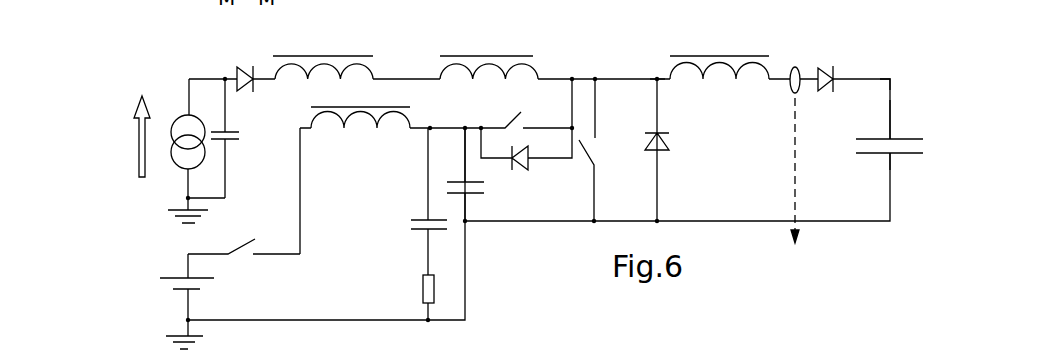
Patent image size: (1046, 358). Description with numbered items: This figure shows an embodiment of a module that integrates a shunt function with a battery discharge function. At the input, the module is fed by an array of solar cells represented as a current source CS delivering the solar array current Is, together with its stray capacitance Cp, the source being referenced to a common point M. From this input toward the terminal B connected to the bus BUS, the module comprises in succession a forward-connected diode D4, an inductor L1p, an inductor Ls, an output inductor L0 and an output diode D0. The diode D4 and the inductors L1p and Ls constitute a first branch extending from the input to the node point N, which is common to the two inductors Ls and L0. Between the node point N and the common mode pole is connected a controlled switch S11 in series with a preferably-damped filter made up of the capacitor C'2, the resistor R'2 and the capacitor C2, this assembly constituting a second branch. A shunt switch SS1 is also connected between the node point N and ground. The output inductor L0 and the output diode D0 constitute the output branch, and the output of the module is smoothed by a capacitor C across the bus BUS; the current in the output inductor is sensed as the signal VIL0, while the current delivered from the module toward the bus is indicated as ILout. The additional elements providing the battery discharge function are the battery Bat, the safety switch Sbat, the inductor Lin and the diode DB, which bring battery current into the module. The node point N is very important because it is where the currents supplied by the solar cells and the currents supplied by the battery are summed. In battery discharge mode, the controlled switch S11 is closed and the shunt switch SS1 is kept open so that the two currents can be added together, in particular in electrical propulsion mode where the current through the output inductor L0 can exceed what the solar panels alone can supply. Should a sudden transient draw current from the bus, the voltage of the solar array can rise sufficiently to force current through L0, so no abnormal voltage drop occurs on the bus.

The solar array current Is is at (129, 136).
The current source CS is at (187, 151).
The stray capacitance Cp is at (239, 138).
The forward-connected diode D4 is at (235, 61).
The inductor L1p is at (341, 48).
The inductor Ls is at (495, 48).
The inductor Lin is at (360, 105).
The safety switch Sbat is at (244, 233).
The battery Bat is at (163, 287).
The ground/reference node M is at (195, 339).
The filter capacitor C'2 is at (412, 201).
The filter damping resistor R'2 is at (408, 296).
The filter capacitor C2 is at (484, 174).
The controlled switch S11 is at (526, 124).
The shunt switch SS1 is at (608, 150).
The node point N is at (650, 66).
The diode DB is at (674, 150).
The output inductor L0 is at (719, 51).
The inductor current sensor V(IL0) VIL0 is at (790, 66).
The output diode D0 is at (833, 64).
The terminal B is at (892, 79).
The bus BUS is at (892, 117).
The bus capacitor C is at (889, 153).
The output load current ILout is at (823, 179).